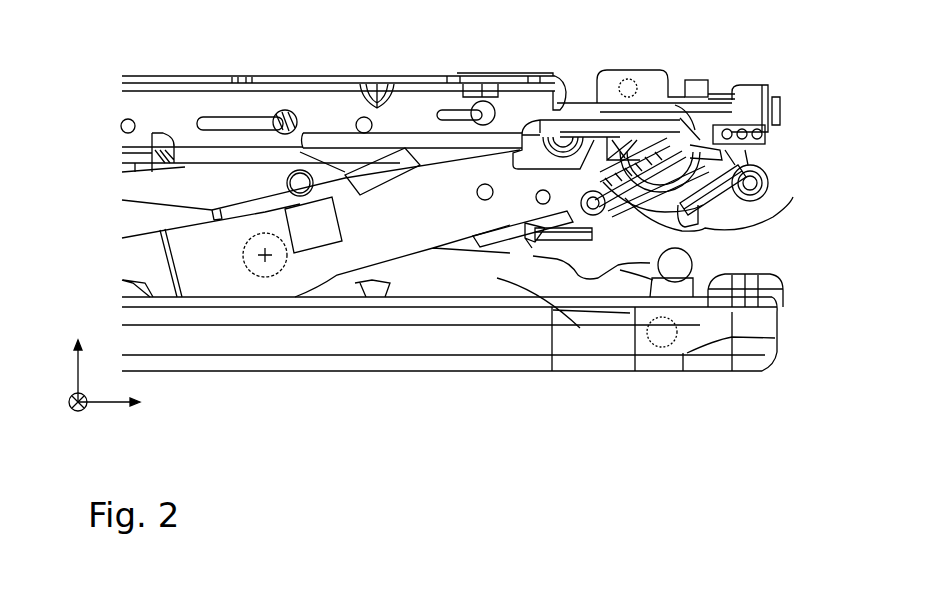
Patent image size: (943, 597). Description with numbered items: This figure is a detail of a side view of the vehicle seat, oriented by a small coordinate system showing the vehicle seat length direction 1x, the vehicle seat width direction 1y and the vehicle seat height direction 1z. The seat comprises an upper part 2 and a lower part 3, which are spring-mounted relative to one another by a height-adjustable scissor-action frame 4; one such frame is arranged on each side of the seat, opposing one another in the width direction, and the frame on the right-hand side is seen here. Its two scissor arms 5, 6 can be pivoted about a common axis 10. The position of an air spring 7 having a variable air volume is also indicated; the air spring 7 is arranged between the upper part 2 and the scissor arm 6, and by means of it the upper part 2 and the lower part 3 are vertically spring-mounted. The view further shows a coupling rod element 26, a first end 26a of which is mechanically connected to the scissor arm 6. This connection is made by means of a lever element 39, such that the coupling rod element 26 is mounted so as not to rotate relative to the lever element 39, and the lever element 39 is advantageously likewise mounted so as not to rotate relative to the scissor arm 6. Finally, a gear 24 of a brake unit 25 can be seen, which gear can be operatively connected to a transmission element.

The upper part 2 is at (326, 107).
The lower part 3 is at (752, 355).
The scissor-action frame 4 is at (111, 220).
The scissor arm 5 is at (512, 240).
The scissor arm 6 is at (455, 175).
The air spring 7 is at (410, 155).
The common axis 10 is at (262, 258).
The gear 24 is at (748, 205).
The brake unit 25 is at (698, 74).
The coupling rod element 26 is at (648, 190).
The first end 26a is at (592, 195).
The lever element 39 is at (594, 333).
The vehicle seat length direction 1x is at (118, 405).
The vehicle seat width direction 1y is at (68, 402).
The vehicle seat height direction 1z is at (76, 355).